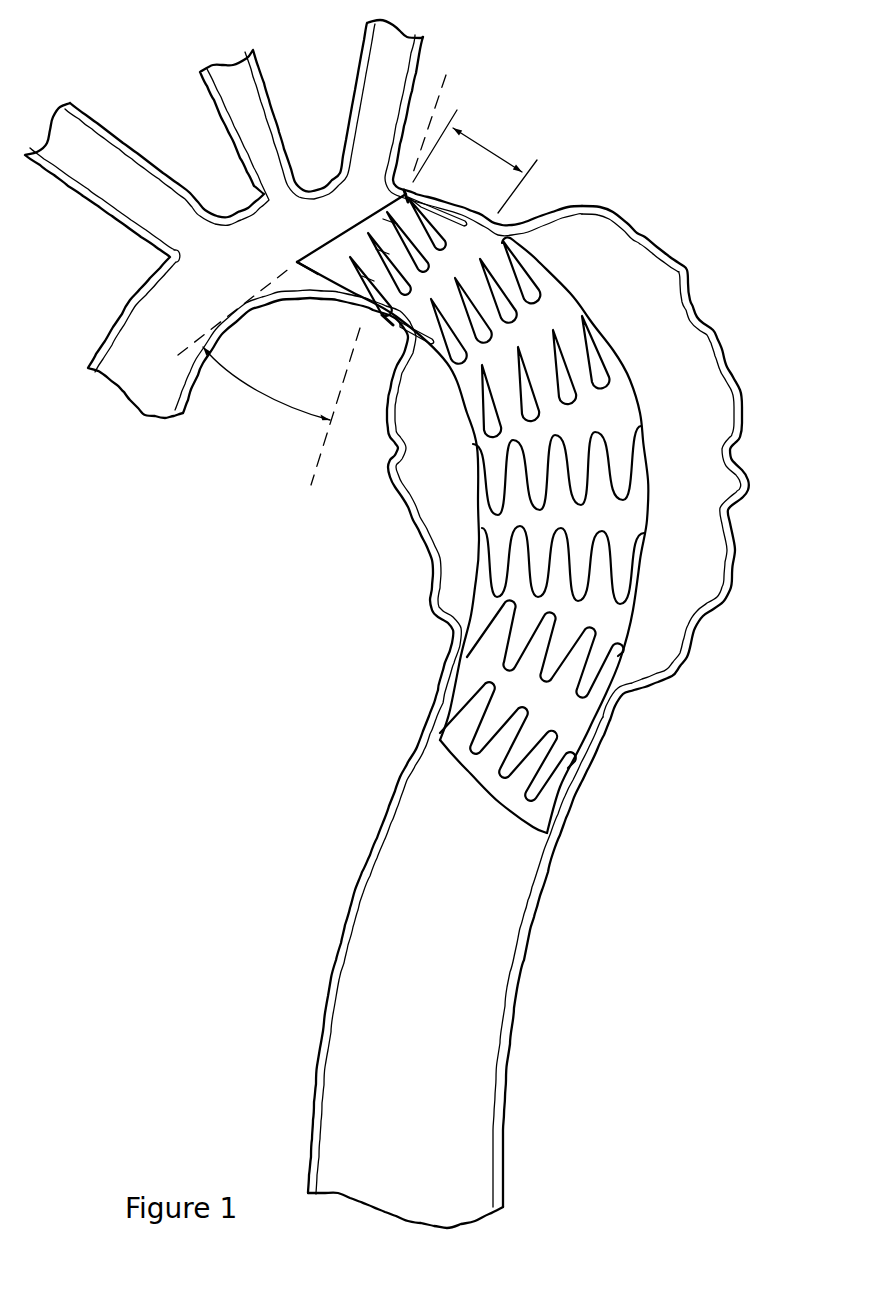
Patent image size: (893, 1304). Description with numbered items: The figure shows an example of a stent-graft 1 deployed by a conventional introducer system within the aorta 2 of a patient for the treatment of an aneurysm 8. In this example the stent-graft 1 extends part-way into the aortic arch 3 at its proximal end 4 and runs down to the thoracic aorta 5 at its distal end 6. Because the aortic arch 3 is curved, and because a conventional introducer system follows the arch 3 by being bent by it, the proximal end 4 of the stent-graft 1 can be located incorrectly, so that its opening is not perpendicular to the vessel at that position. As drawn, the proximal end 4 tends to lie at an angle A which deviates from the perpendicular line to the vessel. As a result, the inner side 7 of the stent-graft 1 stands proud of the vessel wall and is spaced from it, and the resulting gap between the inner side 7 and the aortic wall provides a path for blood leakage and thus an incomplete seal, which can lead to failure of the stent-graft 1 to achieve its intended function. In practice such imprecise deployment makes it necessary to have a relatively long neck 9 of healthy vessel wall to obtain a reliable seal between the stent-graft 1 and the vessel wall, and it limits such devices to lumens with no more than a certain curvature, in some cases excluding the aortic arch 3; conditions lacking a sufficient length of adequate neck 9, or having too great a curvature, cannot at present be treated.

The stent-graft 1 is at (521, 275).
The aorta 2 is at (403, 878).
The aortic arch 3 is at (365, 184).
The proximal end 4 is at (347, 220).
The thoracic aorta 5 is at (544, 880).
The distal end 6 is at (441, 744).
The inner side 7 is at (297, 263).
The aneurysm 8 is at (706, 337).
The neck 9 is at (475, 161).
The angle A is at (312, 280).